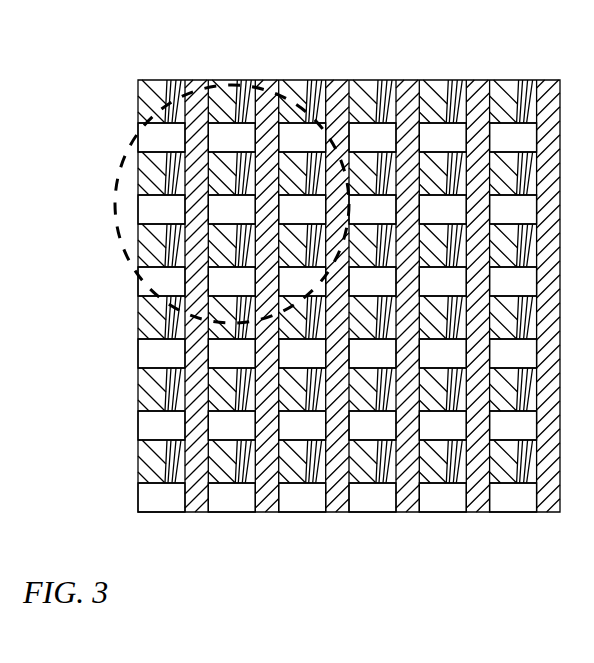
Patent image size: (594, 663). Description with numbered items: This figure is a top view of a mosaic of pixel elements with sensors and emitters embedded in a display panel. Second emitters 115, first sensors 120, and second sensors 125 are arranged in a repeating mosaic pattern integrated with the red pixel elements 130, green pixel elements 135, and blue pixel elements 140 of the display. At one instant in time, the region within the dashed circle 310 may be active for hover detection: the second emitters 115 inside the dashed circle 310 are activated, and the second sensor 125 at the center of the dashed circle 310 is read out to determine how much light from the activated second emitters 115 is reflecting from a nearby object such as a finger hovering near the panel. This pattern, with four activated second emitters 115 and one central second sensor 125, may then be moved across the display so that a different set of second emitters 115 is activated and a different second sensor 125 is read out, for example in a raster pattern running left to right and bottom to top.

The second emitter 115 is at (337, 317).
The first sensor 120 is at (302, 281).
The second sensor 125 is at (372, 353).
The red pixel element 130 is at (362, 80).
The green pixel element 135 is at (455, 80).
The blue pixel element 140 is at (408, 80).
The dashed circle 310 is at (113, 198).